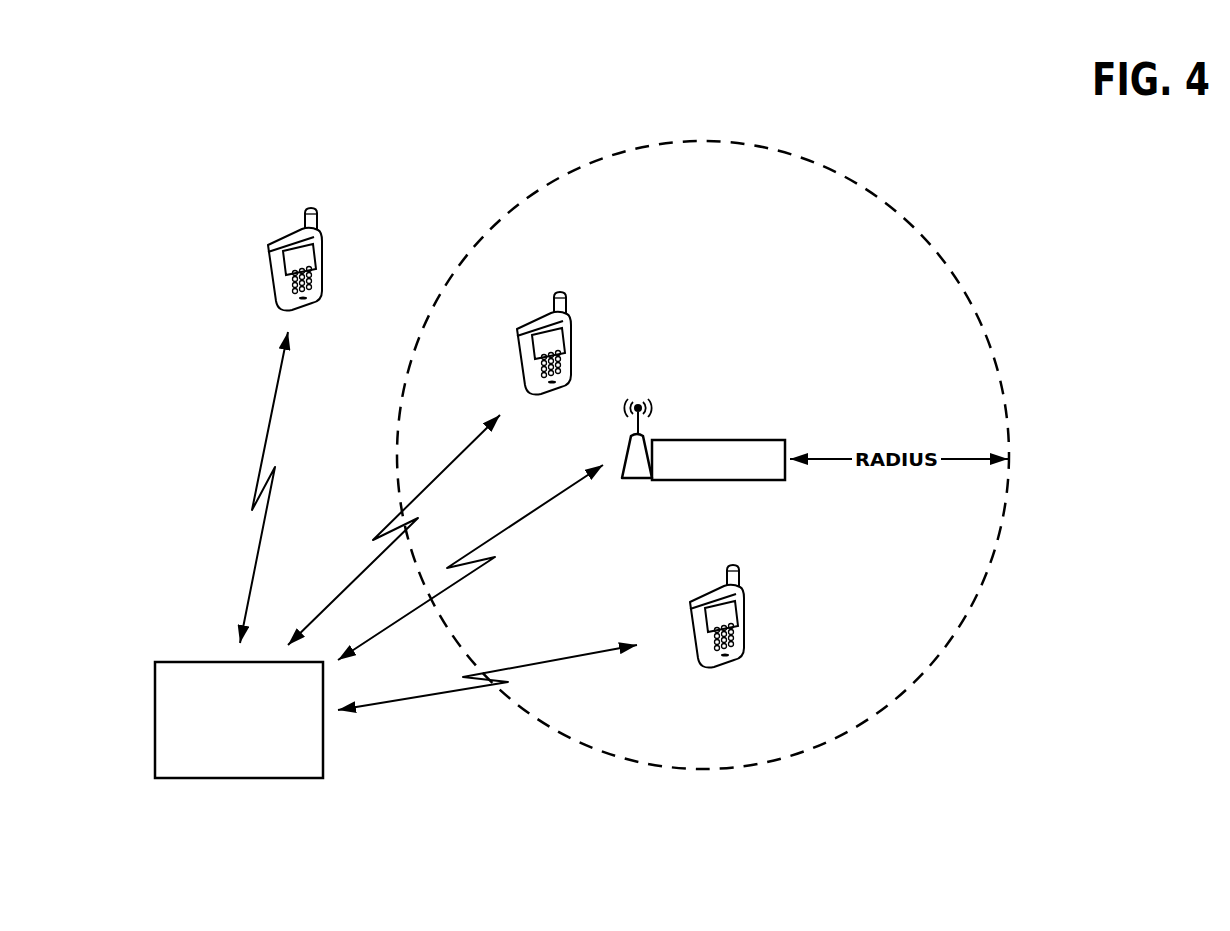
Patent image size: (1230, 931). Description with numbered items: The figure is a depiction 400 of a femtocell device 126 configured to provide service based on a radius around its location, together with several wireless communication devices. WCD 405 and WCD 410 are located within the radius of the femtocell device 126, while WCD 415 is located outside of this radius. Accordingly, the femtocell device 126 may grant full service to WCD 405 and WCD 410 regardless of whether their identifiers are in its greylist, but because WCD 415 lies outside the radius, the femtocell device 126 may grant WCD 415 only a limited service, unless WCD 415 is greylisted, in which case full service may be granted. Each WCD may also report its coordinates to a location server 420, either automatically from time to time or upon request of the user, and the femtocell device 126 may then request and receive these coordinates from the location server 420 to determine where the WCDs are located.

The depiction 400 is at (1006, 236).
The WCD 405 is at (517, 367).
The WCD 410 is at (690, 640).
The WCD 415 is at (268, 270).
The femtocell device 126 is at (758, 440).
The location server 420 is at (295, 778).